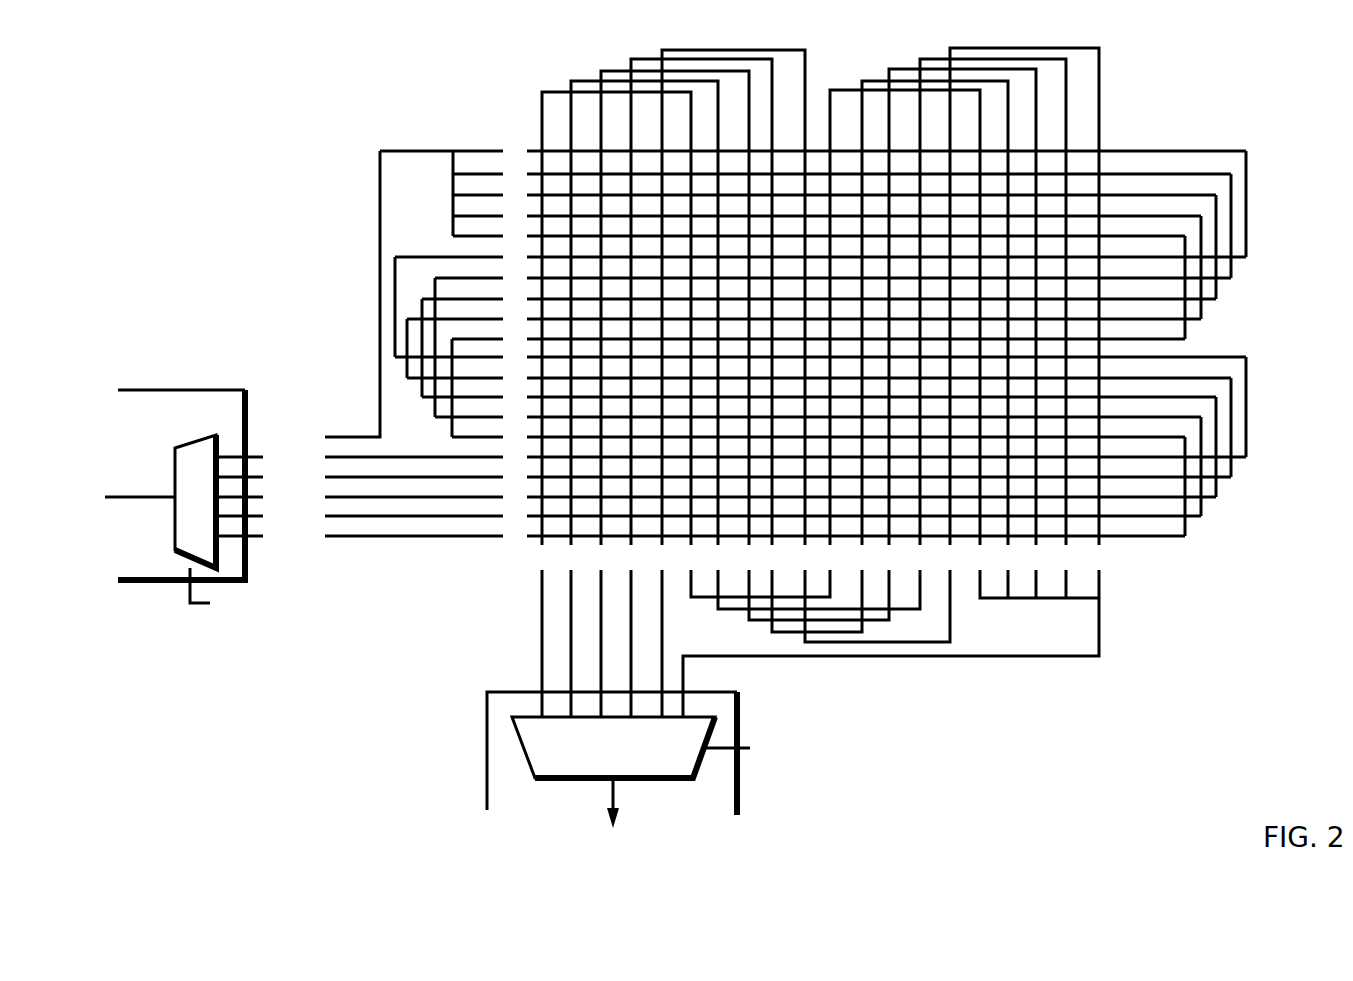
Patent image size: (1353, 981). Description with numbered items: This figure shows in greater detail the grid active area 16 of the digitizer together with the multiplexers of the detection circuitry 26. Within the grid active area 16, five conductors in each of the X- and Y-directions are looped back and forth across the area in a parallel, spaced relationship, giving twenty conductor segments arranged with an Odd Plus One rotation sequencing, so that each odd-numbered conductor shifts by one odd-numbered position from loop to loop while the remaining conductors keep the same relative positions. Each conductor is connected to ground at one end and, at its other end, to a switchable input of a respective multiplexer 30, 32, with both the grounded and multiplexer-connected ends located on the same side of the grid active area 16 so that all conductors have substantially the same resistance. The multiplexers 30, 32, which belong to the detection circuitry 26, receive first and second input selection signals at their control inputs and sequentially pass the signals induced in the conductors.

The grid active area 16 is at (1226, 84).
The detection circuitry 26 is at (216, 390).
The multiplexer 30 is at (196, 442).
The multiplexer 32 is at (536, 770).